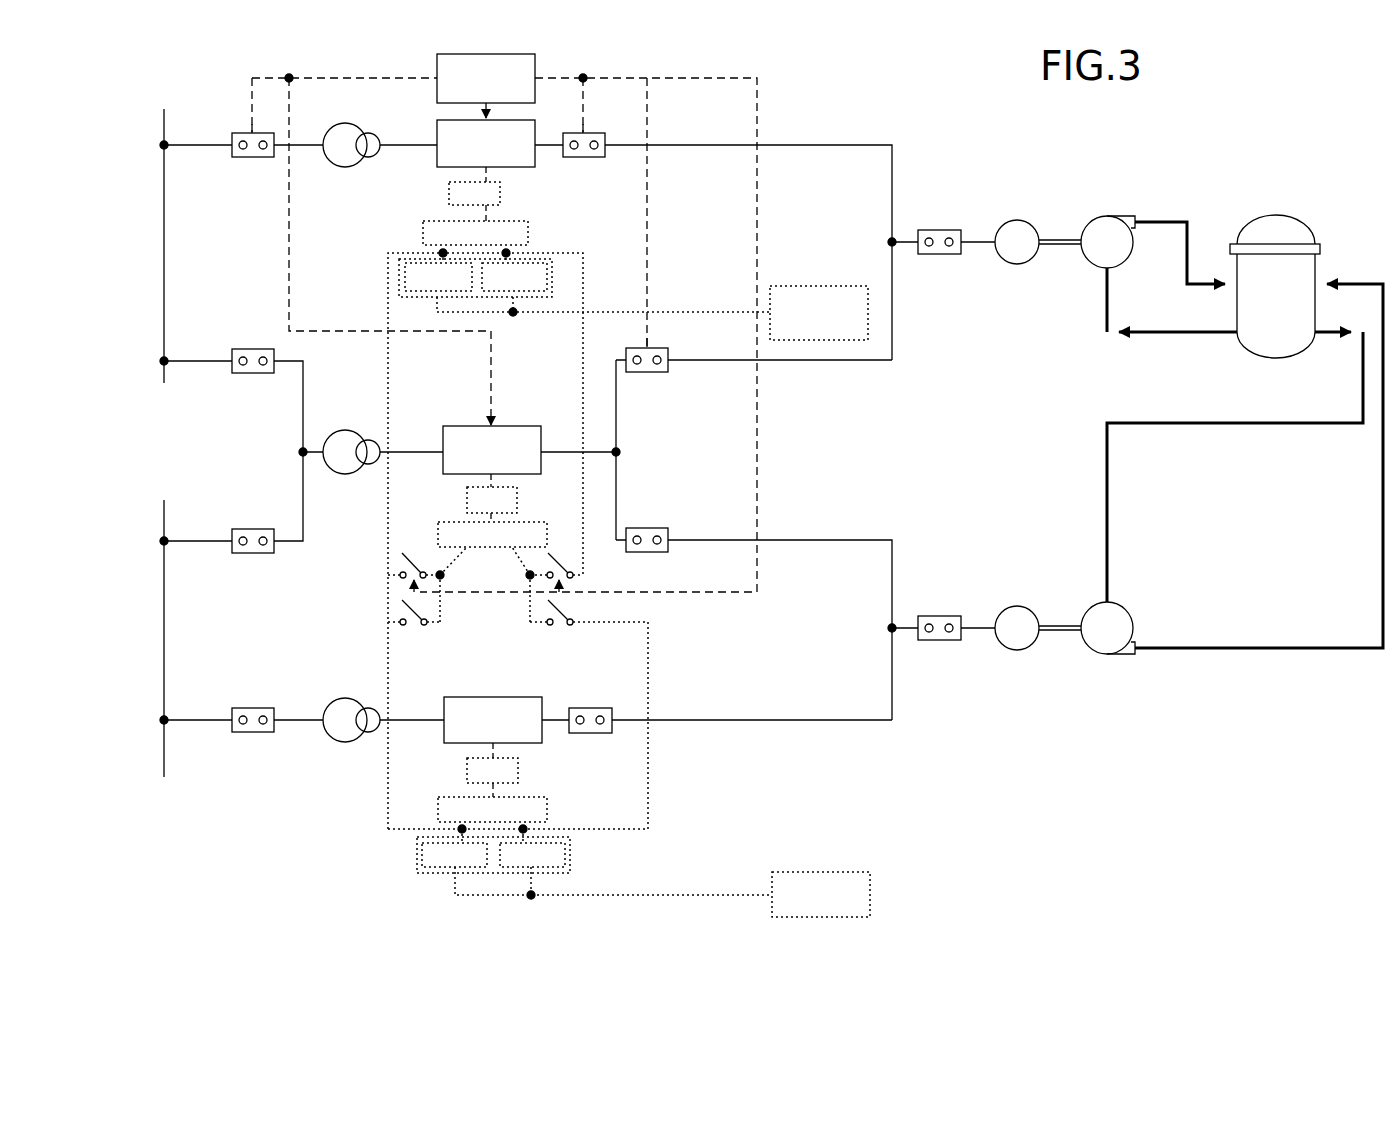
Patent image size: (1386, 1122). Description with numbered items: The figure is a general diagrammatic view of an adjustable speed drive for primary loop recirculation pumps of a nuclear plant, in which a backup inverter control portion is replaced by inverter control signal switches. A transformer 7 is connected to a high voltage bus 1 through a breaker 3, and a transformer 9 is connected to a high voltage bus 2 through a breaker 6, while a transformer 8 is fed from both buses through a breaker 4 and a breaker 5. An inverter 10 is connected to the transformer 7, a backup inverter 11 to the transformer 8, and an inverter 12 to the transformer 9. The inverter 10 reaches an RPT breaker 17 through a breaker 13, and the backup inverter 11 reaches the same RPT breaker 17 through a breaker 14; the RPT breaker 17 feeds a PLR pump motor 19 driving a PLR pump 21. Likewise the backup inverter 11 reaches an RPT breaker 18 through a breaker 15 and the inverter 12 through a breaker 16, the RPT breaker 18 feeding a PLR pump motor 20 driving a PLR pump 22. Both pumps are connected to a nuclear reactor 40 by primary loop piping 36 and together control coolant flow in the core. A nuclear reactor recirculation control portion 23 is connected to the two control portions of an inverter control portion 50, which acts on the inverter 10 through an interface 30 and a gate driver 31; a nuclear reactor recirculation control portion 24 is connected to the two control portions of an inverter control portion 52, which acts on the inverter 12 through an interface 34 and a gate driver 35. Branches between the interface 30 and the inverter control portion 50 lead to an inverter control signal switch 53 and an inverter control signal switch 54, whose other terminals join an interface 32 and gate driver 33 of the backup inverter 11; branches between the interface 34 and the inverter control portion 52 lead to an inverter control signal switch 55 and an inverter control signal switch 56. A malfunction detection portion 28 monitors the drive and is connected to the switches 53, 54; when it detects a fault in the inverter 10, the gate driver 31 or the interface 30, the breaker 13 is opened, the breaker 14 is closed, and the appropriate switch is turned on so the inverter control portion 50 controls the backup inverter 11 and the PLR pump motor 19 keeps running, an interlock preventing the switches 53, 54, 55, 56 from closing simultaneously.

The high voltage bus 1 is at (163, 123).
The high voltage bus 2 is at (163, 515).
The breaker 3 is at (249, 133).
The breaker 4 is at (258, 349).
The breaker 5 is at (258, 529).
The breaker 6 is at (258, 708).
The transformer 7 is at (345, 167).
The transformer 8 is at (345, 474).
The transformer 9 is at (345, 742).
The inverter 10 is at (437, 134).
The backup inverter 11 is at (443, 443).
The inverter 12 is at (444, 712).
The breaker 13 is at (594, 133).
The breaker 14 is at (668, 366).
The breaker 15 is at (650, 528).
The breaker 16 is at (593, 708).
The RPT breaker 17 is at (942, 230).
The RPT breaker 18 is at (940, 640).
The PLR pump motor 19 is at (1018, 220).
The PLR pump motor 20 is at (1017, 650).
The PLR pump 21 is at (1106, 216).
The PLR pump 22 is at (1107, 654).
The nuclear reactor recirculation control portion 23 is at (820, 286).
The nuclear reactor recirculation control portion 24 is at (820, 872).
The malfunction detection portion 28 is at (437, 72).
The interface 30 is at (528, 233).
The gate driver 31 is at (500, 193).
The interface 32 is at (438, 535).
The gate driver 33 is at (517, 501).
The interface 34 is at (547, 811).
The gate driver 35 is at (518, 771).
The primary loop piping 36 is at (1107, 471).
The nuclear reactor 40 is at (1275, 215).
The inverter control portion 50 is at (399, 279).
The inverter control portion 52 is at (417, 856).
The inverter control signal switch 53 is at (400, 577).
The inverter control signal switch 54 is at (574, 577).
The inverter control signal switch 55 is at (416, 627).
The inverter control signal switch 56 is at (558, 627).